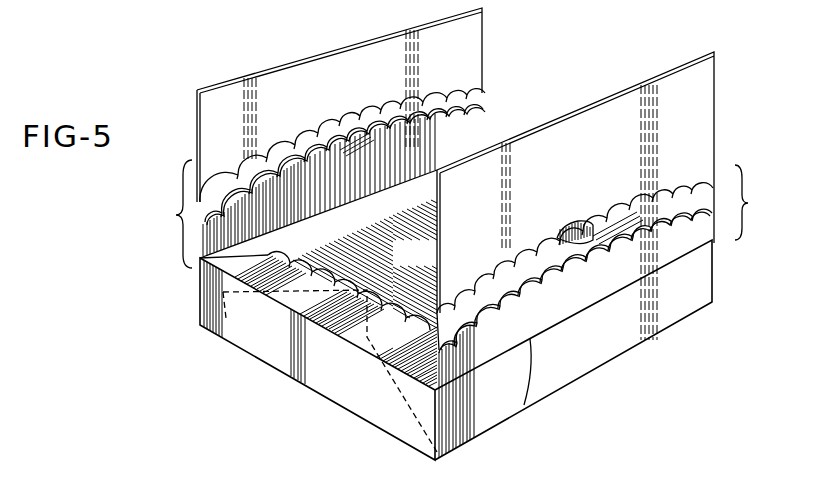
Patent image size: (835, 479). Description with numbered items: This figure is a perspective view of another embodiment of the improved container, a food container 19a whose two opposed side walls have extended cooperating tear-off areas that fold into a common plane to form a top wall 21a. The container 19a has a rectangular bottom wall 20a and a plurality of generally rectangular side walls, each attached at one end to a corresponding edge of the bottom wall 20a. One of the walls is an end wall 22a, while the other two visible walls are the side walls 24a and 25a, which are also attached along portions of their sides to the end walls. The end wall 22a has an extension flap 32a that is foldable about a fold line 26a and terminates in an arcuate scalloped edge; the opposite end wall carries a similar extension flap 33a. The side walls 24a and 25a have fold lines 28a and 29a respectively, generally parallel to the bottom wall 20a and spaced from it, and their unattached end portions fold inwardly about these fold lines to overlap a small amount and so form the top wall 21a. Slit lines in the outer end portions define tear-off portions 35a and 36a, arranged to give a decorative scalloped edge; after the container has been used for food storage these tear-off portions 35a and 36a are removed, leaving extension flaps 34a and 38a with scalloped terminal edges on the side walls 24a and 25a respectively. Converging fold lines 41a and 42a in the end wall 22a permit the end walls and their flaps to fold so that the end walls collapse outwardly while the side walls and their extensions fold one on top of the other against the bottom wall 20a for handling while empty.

The food container 19a is at (750, 104).
The rectangular bottom wall 20a is at (432, 259).
The top wall 21a is at (578, 93).
The end wall 22a is at (343, 396).
The side wall 24a is at (450, 158).
The side wall 25a is at (578, 372).
The fold line 26a is at (272, 298).
The fold line 28a is at (379, 187).
The fold line 29a is at (524, 405).
The extension flap 32a is at (345, 327).
The extension flap 33a is at (627, 219).
The extension flap 34a is at (465, 104).
The tear-off portion 35a is at (364, 132).
The tear-off portion 36a is at (604, 200).
The extension flap 38a is at (700, 238).
The converging fold line 41a is at (396, 398).
The converging fold line 42a is at (238, 300).